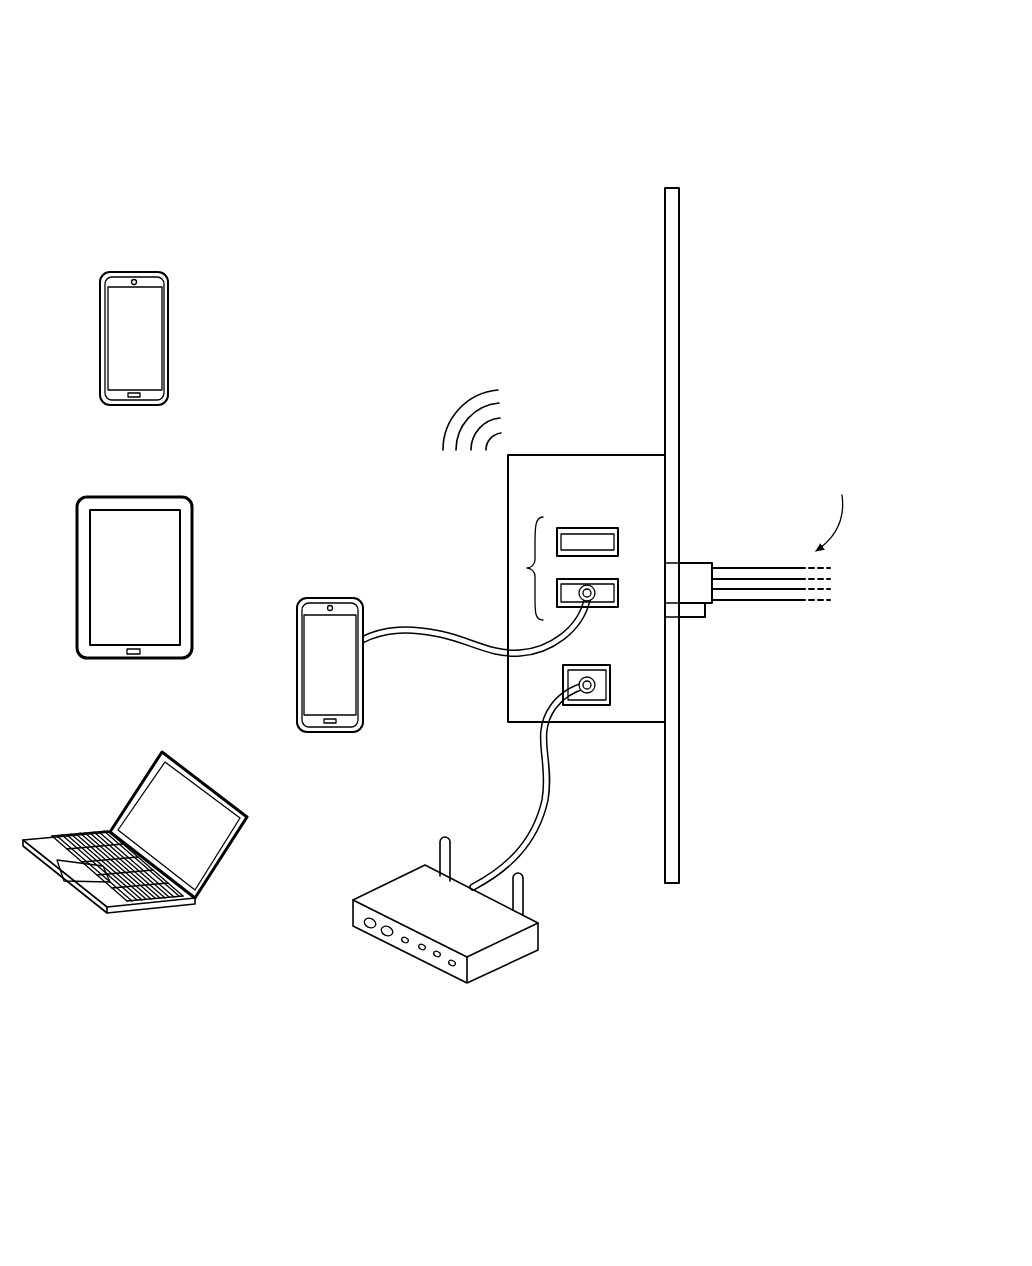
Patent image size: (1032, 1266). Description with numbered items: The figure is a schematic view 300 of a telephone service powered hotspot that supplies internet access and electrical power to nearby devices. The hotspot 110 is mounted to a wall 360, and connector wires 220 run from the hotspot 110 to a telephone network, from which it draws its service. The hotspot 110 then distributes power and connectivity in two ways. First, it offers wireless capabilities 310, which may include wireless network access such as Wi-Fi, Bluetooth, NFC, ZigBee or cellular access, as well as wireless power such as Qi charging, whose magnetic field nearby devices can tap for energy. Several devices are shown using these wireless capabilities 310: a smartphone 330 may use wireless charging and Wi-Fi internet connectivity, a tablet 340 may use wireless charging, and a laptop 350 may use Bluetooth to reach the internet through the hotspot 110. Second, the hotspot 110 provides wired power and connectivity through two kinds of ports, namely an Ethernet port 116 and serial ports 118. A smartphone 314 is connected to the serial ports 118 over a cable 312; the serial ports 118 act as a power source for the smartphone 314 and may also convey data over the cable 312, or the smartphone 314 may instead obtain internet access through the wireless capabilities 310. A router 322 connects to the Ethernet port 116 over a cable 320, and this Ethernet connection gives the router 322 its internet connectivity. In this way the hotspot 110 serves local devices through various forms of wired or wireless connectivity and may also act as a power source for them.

The schematic view 300 is at (258, 93).
The hotspot 110 is at (578, 455).
The Ethernet port 116 is at (598, 707).
The serial ports 118 is at (527, 568).
The connector wires 220 is at (754, 567).
The wireless capabilities 310 is at (436, 402).
The cable 312 is at (410, 638).
The smartphone 314 is at (332, 598).
The cable 320 is at (535, 830).
The router 322 is at (500, 970).
The smartphone 330 is at (133, 272).
The tablet 340 is at (193, 548).
The laptop 350 is at (125, 805).
The wall 360 is at (665, 257).